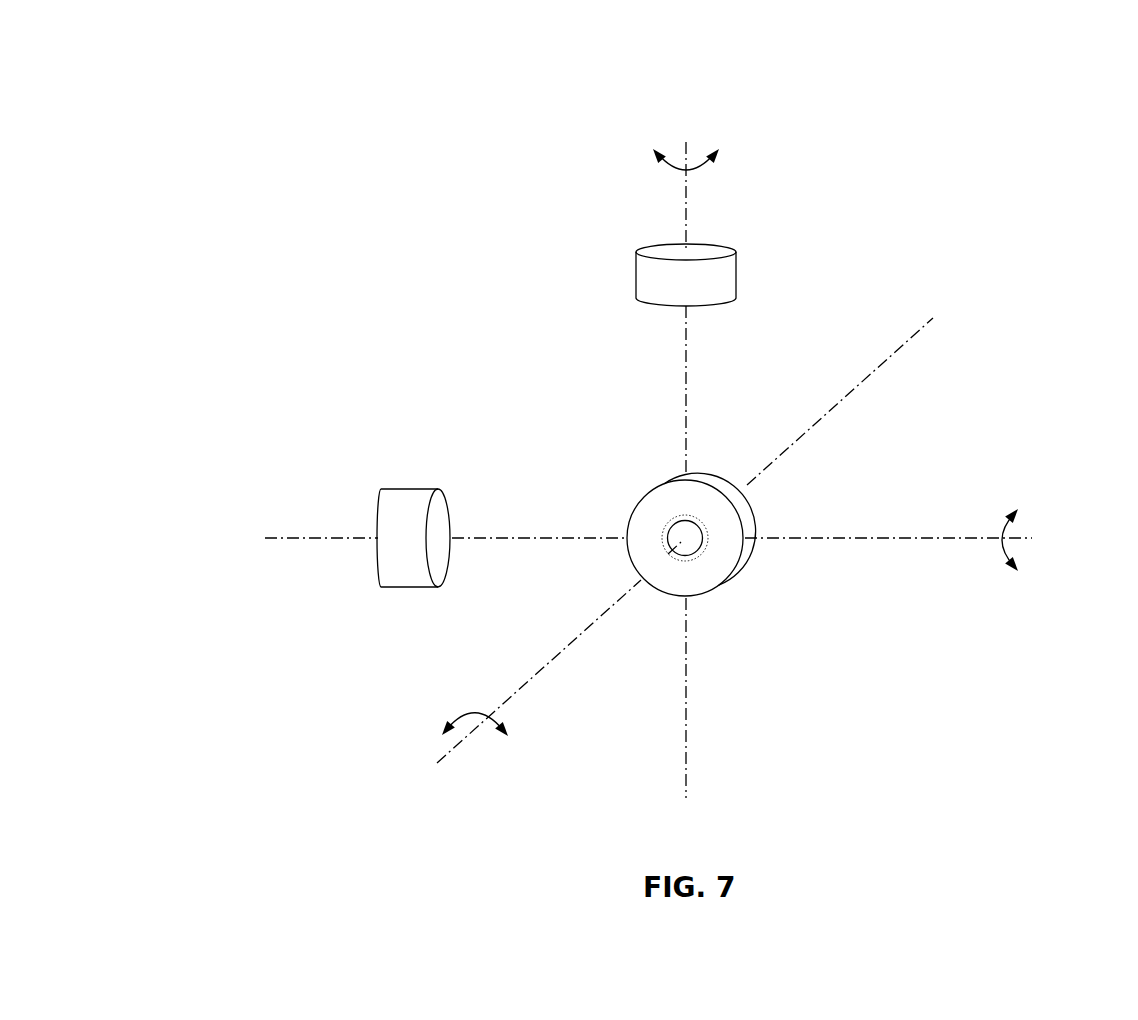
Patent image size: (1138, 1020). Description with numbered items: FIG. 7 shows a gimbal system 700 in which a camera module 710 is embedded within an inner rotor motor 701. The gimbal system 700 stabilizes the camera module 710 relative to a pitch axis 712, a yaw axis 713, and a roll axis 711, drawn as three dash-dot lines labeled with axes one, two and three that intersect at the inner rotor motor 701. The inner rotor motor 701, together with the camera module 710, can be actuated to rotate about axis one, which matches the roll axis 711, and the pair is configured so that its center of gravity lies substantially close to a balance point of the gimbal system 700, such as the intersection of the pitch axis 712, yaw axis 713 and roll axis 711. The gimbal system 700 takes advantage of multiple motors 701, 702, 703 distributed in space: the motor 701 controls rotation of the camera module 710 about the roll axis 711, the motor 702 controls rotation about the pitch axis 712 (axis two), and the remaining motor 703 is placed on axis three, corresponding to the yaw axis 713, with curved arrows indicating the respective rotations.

The gimbal system 700 is at (140, 140).
The inner rotor motor 701 is at (749, 582).
The motor 702 is at (362, 490).
The motor 703 is at (755, 255).
The camera module 710 is at (628, 477).
The roll axis 711 is at (455, 752).
The pitch axis 712 is at (1045, 540).
The yaw axis 713 is at (686, 142).